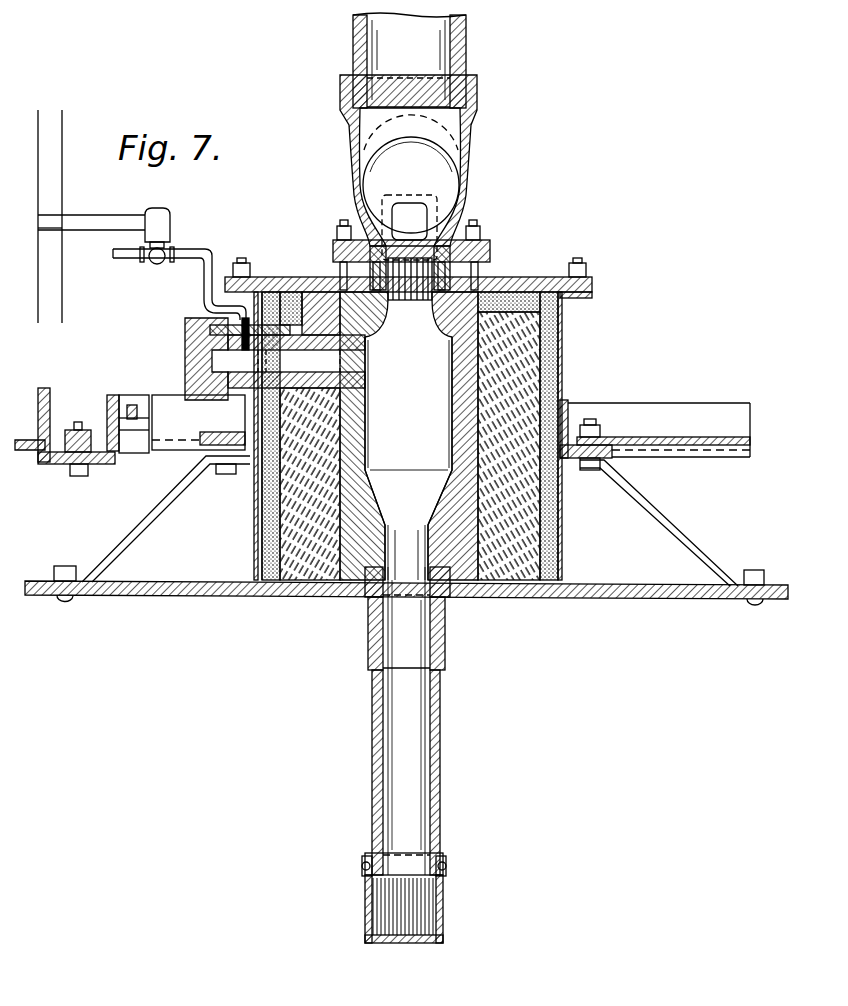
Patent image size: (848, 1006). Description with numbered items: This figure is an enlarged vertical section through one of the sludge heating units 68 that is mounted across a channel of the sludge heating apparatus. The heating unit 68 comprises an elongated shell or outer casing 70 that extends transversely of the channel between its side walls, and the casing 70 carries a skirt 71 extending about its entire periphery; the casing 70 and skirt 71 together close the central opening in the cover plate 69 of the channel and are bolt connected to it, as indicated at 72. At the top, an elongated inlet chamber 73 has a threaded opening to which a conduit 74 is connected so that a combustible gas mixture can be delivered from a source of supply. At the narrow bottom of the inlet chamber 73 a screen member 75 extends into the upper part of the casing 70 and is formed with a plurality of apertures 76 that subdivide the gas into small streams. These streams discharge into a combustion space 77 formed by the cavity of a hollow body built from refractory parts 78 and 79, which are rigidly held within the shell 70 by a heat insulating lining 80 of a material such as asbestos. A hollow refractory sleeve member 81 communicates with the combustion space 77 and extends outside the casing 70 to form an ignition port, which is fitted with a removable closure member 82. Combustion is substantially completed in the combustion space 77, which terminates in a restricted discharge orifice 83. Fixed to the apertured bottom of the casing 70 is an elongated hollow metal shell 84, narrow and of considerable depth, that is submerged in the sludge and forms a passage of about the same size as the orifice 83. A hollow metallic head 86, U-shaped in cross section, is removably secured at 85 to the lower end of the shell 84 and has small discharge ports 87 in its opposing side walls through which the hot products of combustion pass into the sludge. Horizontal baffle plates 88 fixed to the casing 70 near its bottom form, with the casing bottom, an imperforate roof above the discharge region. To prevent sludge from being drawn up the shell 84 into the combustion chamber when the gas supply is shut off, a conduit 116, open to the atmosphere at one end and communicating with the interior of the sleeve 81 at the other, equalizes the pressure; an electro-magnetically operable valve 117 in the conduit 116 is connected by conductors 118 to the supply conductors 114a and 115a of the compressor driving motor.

The heating unit 68 is at (580, 222).
The cover plate 69 is at (26, 440).
The shell or outer casing 70 is at (563, 357).
The skirt 71 is at (190, 434).
The bolt connection 72 is at (78, 428).
The inlet chamber 73 is at (432, 155).
The conduit 74 is at (468, 52).
The screen member 75 is at (455, 252).
The apertures 76 is at (414, 300).
The combustion space 77 is at (430, 406).
The refractory part 78 is at (350, 548).
The refractory part 79 is at (318, 550).
The heat insulating lining 80 is at (308, 285).
The refractory sleeve member 81 is at (340, 346).
The removable closure member 82 is at (185, 332).
The restricted discharge orifice 83 is at (402, 535).
The hollow metal shell 84 is at (440, 733).
The removable securing means 85 is at (362, 864).
The hollow metallic head 86 is at (406, 943).
The discharge ports 87 is at (368, 912).
The baffle plate 88 is at (172, 582).
The supply conductor 114a is at (76, 216).
The supply conductor 115a is at (38, 318).
The conduit 116 is at (204, 278).
The electro-magnetically operable valve 117 is at (172, 222).
The conductors 118 is at (105, 229).